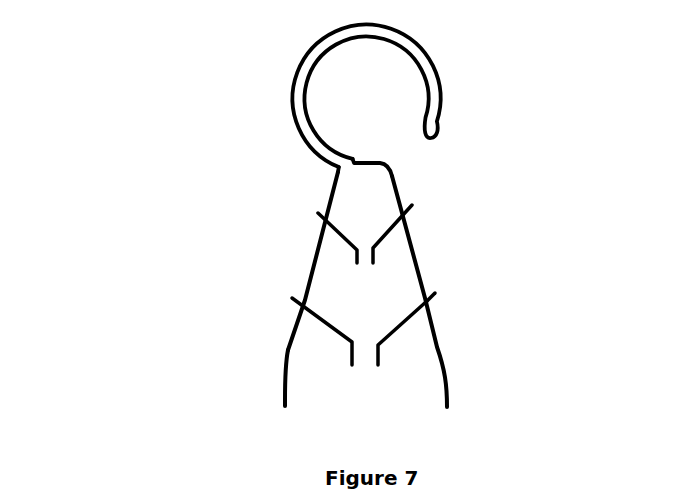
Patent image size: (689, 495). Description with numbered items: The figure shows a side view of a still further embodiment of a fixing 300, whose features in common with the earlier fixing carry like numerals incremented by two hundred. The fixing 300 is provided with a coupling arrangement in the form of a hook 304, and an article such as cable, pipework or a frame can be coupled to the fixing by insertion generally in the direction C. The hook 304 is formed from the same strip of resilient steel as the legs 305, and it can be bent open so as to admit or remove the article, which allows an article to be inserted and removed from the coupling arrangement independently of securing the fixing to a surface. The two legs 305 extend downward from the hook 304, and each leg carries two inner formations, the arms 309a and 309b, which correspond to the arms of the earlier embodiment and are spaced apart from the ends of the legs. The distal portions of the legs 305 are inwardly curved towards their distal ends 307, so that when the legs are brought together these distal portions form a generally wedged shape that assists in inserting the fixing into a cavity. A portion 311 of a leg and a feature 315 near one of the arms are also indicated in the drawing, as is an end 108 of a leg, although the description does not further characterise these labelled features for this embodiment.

The fixing 300 is at (136, 118).
The hook 304 is at (445, 80).
The distal ends 307 is at (386, 157).
The legs 305 is at (438, 337).
The arm 309a is at (350, 243).
The arm 309b is at (325, 328).
The lower leg portion 311 is at (307, 356).
The barb tip 315 is at (437, 297).
The distal end 108 is at (285, 407).
The direction C is at (401, 149).